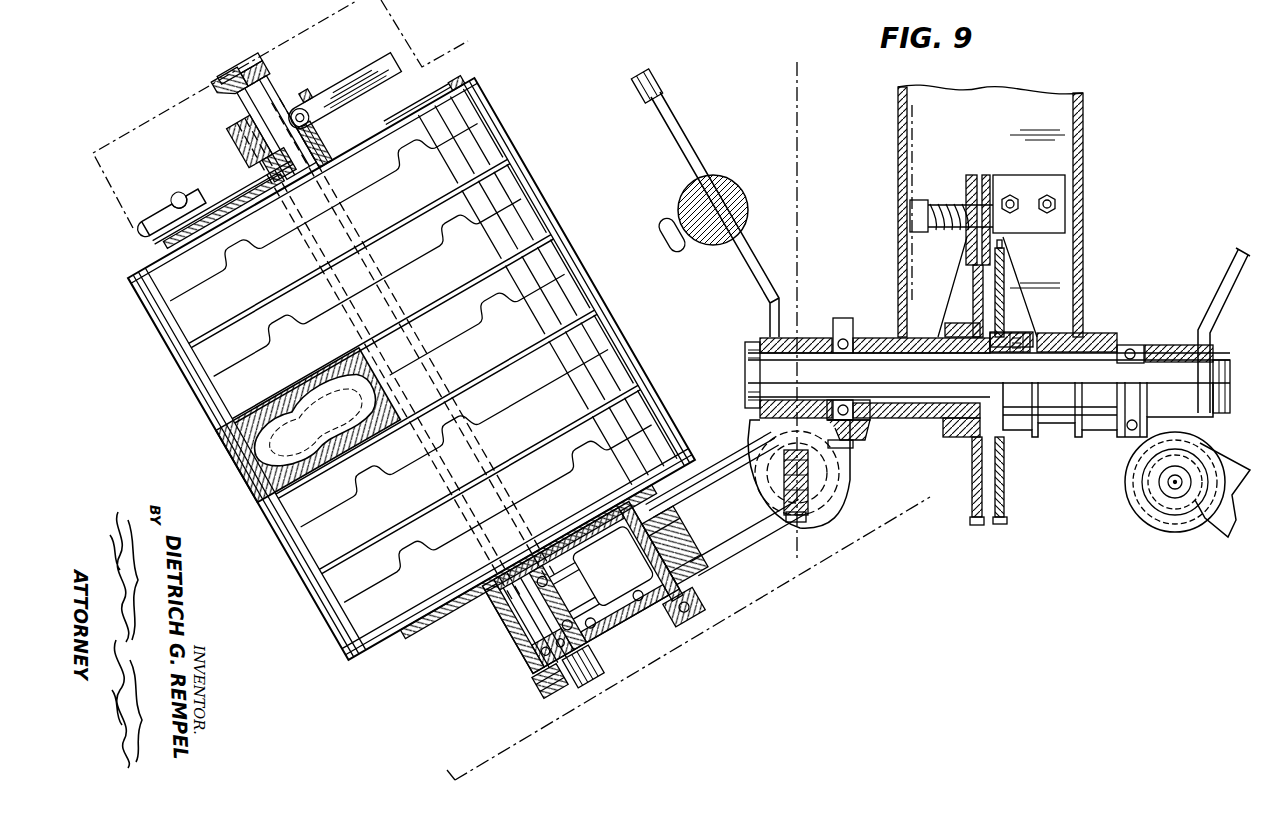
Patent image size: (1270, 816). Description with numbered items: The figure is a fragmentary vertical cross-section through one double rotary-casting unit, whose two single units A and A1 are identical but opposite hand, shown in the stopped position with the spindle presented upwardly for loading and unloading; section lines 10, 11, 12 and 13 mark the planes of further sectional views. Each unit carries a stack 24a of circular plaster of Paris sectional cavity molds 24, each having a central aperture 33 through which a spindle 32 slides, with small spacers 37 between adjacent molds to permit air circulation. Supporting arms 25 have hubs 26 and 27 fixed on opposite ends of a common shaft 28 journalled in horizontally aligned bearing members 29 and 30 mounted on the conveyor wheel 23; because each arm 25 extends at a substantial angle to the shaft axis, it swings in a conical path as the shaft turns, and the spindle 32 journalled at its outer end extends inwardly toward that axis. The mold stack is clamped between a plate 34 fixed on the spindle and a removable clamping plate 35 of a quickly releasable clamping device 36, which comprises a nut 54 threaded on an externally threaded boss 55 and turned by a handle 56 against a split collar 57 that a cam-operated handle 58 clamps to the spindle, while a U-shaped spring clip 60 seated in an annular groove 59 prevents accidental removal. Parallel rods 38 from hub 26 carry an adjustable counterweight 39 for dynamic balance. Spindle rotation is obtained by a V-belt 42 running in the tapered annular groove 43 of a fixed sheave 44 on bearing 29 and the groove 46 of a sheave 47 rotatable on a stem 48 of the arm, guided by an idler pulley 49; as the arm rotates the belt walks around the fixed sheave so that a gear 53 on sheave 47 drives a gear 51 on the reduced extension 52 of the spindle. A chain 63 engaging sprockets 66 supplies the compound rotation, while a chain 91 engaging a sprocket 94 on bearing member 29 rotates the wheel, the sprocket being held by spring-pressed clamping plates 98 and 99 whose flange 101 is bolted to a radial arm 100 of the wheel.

The section line 10- 10 is at (468, 44).
The section line 11- 11 is at (437, 742).
The section line 12- 12 is at (800, 60).
The section line 13- 13 is at (932, 296).
The conveyor wheel 23 is at (898, 165).
The sectional cavity molds 24 is at (672, 432).
The stack of molds 24a is at (192, 408).
The supporting arm 25 is at (1230, 470).
The hub 26 is at (808, 340).
The hub 27 is at (1170, 347).
The common shaft 28 is at (775, 364).
The bearing member 29 is at (866, 338).
The bearing member 30 is at (1108, 336).
The spindle 32 is at (505, 585).
The central aperture 33 is at (488, 450).
The plate 34 is at (372, 648).
The removable clamping plate 35 is at (420, 100).
The quickly releasable clamping device 36 is at (234, 153).
The spacers 37 is at (595, 420).
The parallel rods 38 is at (1222, 270).
The counterweight 39 is at (745, 196).
The V-belt 42 is at (843, 320).
The tapered annular groove 43 is at (855, 446).
The fixed sheave 44 is at (866, 438).
The tapered annular groove 46 is at (722, 560).
The sheave 47 is at (703, 565).
The stem 48 is at (680, 630).
The idler pulley 49 is at (845, 497).
The gear 51 is at (545, 680).
The reduced extension 52 is at (590, 675).
The gear 53 is at (640, 648).
The nut 54 is at (250, 173).
The externally threaded boss 55 is at (258, 182).
The handle 56 is at (198, 196).
The split collar 57 is at (302, 95).
The handle 58 is at (366, 64).
The annular groove 59 is at (258, 90).
The U-shaped spring clip 60 is at (244, 108).
The continuous chain 63 is at (1007, 521).
The sprockets 66 is at (1004, 270).
The continuous chain 91 is at (970, 522).
The sprocket 94 is at (972, 312).
The spring-pressed clamping plate 98 is at (968, 180).
The clamping plate 99 is at (990, 180).
The radial arm 100 is at (1083, 172).
The flange 101 is at (1065, 212).
The rotary-casting unit A is at (499, 640).
The rotary-casting unit A1 is at (1196, 540).